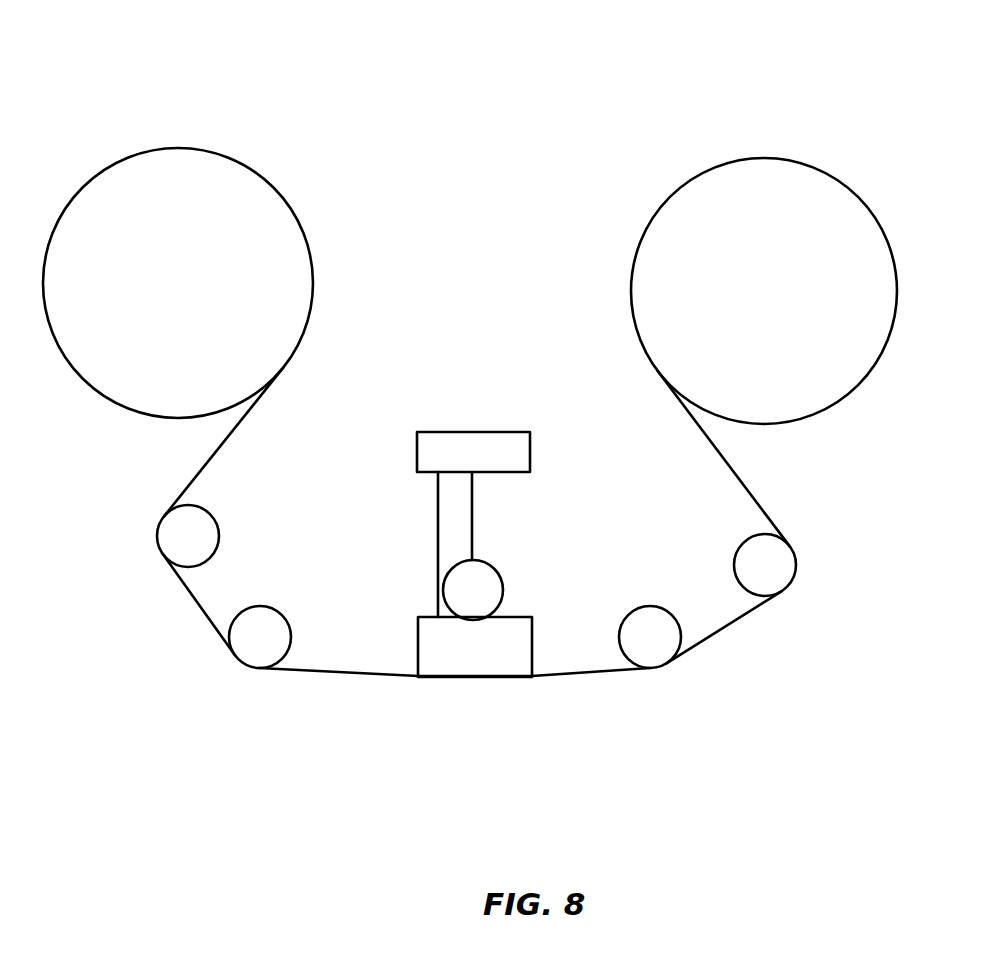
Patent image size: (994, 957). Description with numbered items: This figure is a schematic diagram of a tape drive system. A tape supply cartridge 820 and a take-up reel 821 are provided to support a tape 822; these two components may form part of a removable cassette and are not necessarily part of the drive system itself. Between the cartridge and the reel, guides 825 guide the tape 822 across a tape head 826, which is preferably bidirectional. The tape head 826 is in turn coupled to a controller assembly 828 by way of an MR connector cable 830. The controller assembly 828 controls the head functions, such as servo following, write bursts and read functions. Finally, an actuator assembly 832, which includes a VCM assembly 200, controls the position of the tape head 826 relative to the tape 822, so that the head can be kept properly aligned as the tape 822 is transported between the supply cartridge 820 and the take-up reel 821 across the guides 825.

The tape supply cartridge 820 is at (177, 148).
The take-up reel 821 is at (765, 158).
The tape 822 is at (343, 675).
The guides 825 is at (220, 527).
The tape head 826 is at (533, 647).
The controller assembly 828 is at (472, 432).
The MR connector cable 830 is at (438, 585).
The actuator assembly 832 is at (528, 558).
The VCM assembly 200 is at (500, 568).